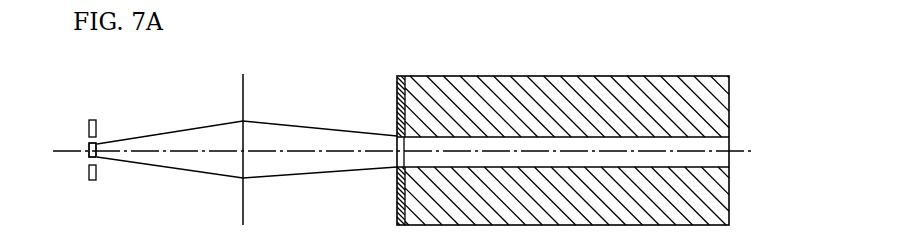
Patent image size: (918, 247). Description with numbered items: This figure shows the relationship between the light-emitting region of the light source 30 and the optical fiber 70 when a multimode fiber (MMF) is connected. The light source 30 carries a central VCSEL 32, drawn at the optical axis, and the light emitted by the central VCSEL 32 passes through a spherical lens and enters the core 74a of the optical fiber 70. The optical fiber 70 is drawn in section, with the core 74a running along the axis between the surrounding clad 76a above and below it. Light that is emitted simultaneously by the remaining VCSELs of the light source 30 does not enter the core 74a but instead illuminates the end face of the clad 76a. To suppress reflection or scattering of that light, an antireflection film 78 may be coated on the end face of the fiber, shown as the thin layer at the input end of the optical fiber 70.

The light source 30 is at (86, 122).
The central VCSEL 32 is at (88, 145).
The optical fiber 70 is at (611, 131).
The core 74a is at (730, 147).
The clad 76a is at (730, 198).
The antireflection film 78 is at (398, 75).